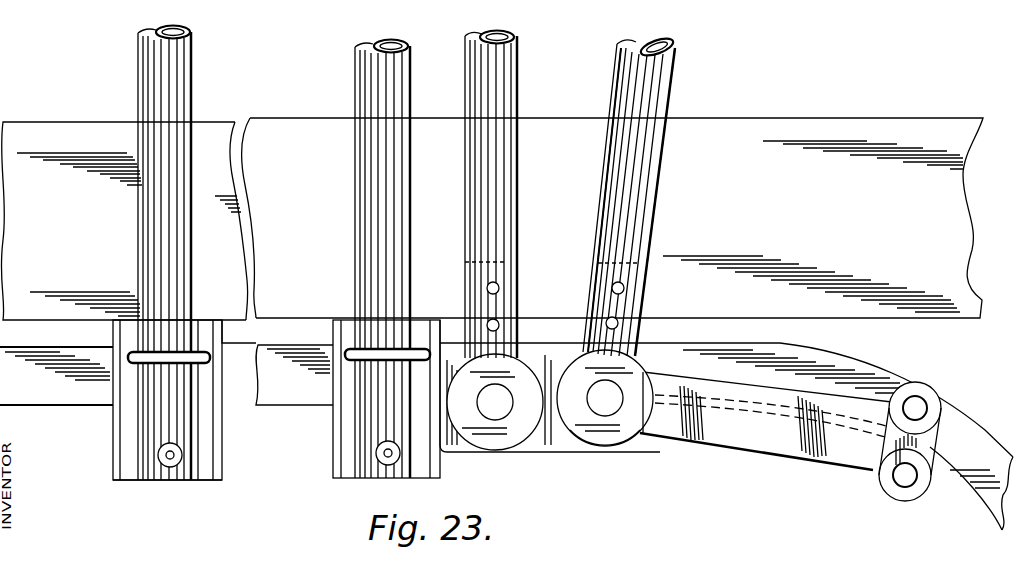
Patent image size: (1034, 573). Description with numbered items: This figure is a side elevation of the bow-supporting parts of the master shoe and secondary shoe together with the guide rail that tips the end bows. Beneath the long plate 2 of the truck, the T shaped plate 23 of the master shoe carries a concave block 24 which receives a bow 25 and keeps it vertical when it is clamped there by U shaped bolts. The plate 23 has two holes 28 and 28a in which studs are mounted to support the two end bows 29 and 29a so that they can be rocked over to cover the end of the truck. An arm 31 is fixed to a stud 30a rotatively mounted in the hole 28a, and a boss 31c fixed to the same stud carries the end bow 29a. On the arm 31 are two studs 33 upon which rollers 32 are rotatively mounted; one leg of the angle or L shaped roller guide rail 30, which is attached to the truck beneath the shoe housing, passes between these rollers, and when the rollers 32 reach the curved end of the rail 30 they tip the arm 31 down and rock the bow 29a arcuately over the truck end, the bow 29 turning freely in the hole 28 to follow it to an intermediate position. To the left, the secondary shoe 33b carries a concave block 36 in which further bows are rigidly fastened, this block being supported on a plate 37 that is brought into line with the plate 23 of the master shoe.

The plate 2 is at (741, 140).
The plate 23 is at (550, 403).
The concave block 24 is at (358, 330).
The bow 25 is at (390, 207).
The hole 28 is at (605, 421).
The hole 28a is at (613, 417).
The end bow 29 is at (505, 213).
The end bow 29a is at (630, 243).
The roller guide rail 30 is at (293, 378).
The stud 30a is at (607, 400).
The arm 31 is at (765, 430).
The boss 31c is at (617, 437).
The rollers 32 is at (915, 383).
The studs 33 is at (915, 408).
The secondary shoe 33b is at (241, 333).
The concave block 36 is at (195, 478).
The plate 37 is at (212, 458).